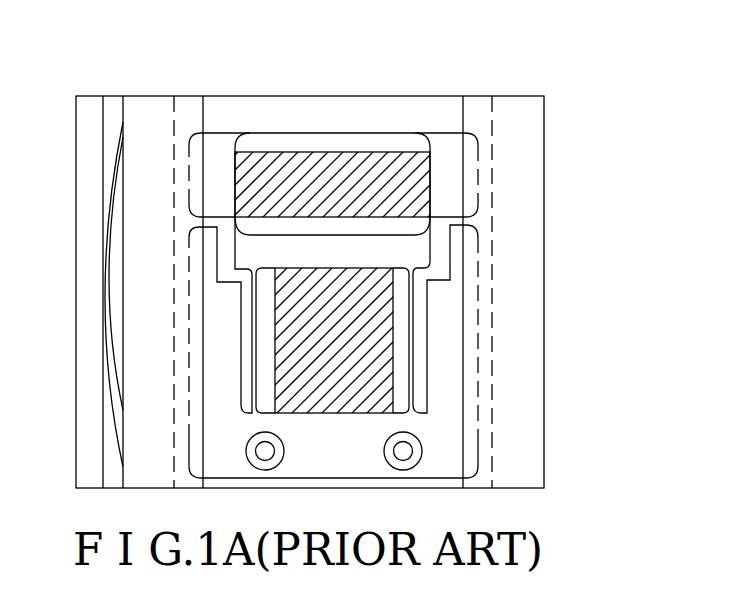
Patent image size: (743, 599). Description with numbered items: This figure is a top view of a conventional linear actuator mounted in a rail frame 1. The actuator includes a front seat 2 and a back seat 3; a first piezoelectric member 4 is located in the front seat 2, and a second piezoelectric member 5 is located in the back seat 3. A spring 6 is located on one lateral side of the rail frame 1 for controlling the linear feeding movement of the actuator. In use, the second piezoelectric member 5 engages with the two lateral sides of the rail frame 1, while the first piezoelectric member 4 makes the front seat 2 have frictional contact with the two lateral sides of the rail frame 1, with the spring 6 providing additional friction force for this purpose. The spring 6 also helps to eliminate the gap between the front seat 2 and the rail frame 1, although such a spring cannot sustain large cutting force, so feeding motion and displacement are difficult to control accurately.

The rail frame 1 is at (587, 160).
The front seat 2 is at (448, 455).
The back seat 3 is at (455, 150).
The first piezoelectric member 4 is at (385, 358).
The second piezoelectric member 5 is at (332, 158).
The spring 6 is at (123, 133).